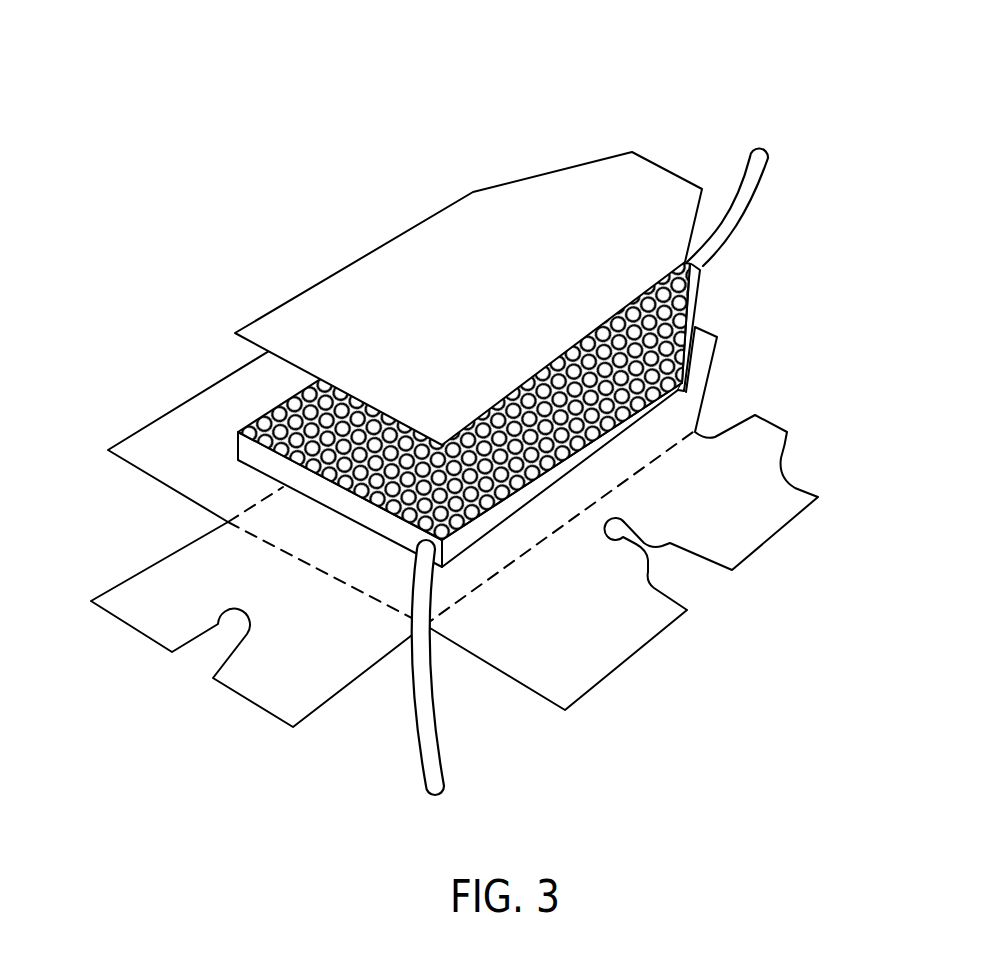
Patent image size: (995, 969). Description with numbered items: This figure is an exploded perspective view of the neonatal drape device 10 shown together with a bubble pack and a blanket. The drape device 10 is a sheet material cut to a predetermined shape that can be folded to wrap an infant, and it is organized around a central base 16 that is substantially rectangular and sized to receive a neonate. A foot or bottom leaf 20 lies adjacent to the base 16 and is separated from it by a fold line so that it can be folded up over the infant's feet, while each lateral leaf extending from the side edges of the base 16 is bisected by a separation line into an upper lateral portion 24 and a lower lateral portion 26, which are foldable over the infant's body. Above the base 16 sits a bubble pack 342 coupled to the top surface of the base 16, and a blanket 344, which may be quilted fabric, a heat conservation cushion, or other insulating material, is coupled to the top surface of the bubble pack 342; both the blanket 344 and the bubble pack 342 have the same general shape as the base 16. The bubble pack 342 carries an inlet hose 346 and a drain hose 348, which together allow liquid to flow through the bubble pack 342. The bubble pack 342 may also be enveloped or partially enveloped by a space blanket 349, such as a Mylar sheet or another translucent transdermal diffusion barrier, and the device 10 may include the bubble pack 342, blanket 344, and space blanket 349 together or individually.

The neonatal drape device 10 is at (209, 148).
The central base 16 is at (353, 558).
The foot or bottom leaf 20 is at (138, 590).
The upper lateral portion 24 is at (740, 525).
The lower lateral portion 26 is at (158, 443).
The bubble pack 342 is at (662, 343).
The blanket 344 is at (460, 220).
The inlet hose 346 is at (760, 165).
The drain hose 348 is at (423, 778).
The space blanket 349 is at (633, 413).